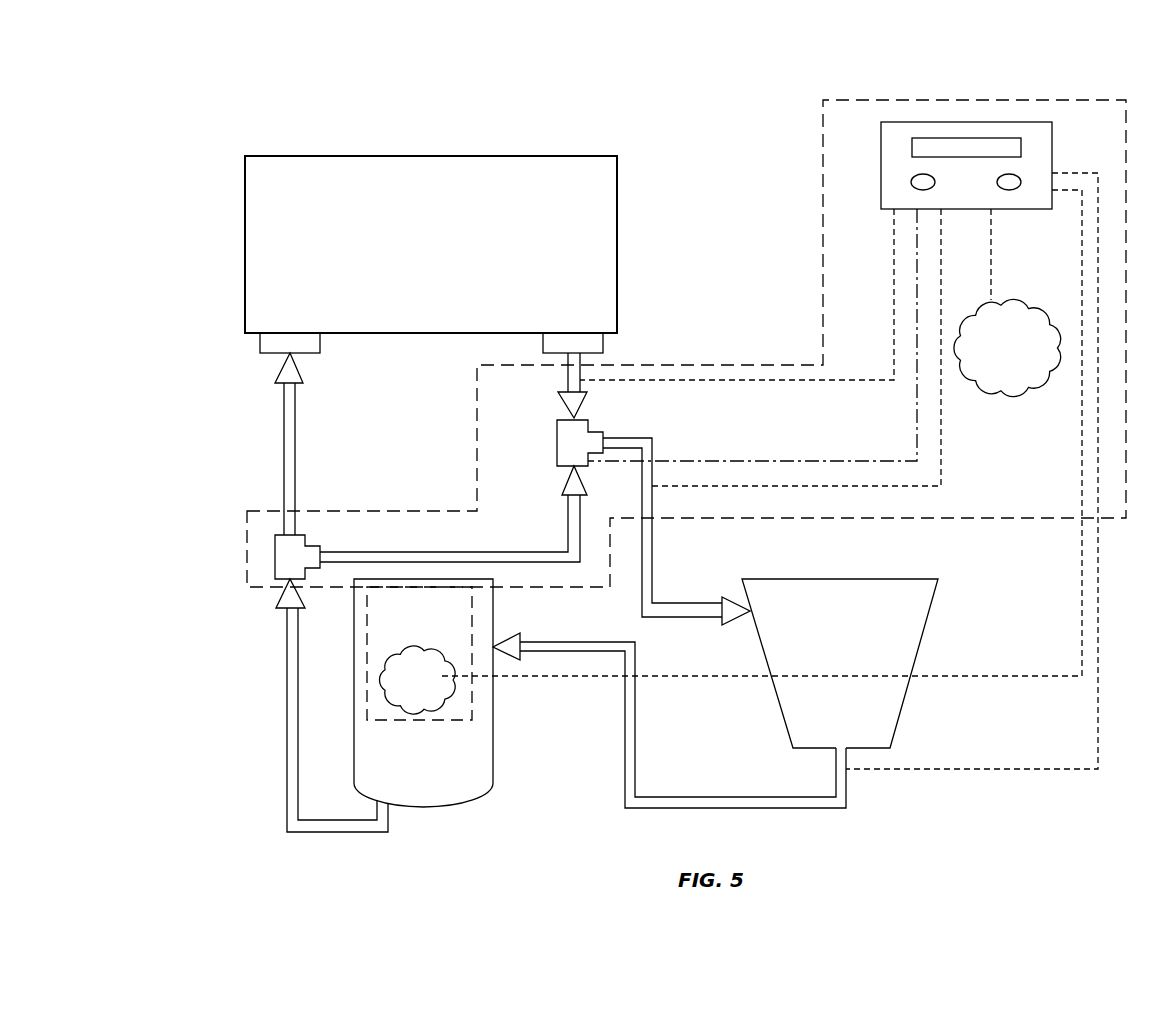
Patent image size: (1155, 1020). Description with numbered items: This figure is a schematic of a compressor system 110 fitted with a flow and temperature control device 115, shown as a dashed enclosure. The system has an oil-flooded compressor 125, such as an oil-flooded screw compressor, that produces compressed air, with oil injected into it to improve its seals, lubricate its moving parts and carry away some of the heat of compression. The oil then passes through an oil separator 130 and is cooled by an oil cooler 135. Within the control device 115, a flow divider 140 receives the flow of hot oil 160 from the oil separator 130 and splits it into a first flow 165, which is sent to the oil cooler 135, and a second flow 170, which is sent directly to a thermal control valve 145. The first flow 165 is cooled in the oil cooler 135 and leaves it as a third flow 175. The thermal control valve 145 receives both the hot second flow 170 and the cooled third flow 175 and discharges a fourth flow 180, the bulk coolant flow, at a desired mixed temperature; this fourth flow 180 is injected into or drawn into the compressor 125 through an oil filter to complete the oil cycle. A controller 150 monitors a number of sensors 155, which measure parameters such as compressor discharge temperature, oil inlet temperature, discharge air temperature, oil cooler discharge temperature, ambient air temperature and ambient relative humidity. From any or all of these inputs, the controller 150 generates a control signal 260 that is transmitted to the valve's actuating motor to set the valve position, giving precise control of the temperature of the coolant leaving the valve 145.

The compressor system 110 is at (674, 80).
The flow and temperature control device 115 is at (1043, 100).
The oil-flooded compressor 125 is at (863, 585).
The oil separator 130 is at (493, 750).
The oil cooler 135 is at (407, 167).
The flow divider 140 is at (278, 553).
The thermal control valve 145 is at (568, 438).
The controller 150 is at (903, 122).
The sensors 155 is at (585, 390).
The flow of hot oil 160 is at (286, 698).
The first flow 165 is at (288, 428).
The second flow 170 is at (405, 553).
The third flow 175 is at (578, 360).
The fourth flow 180 is at (648, 565).
The control signal 260 is at (826, 455).